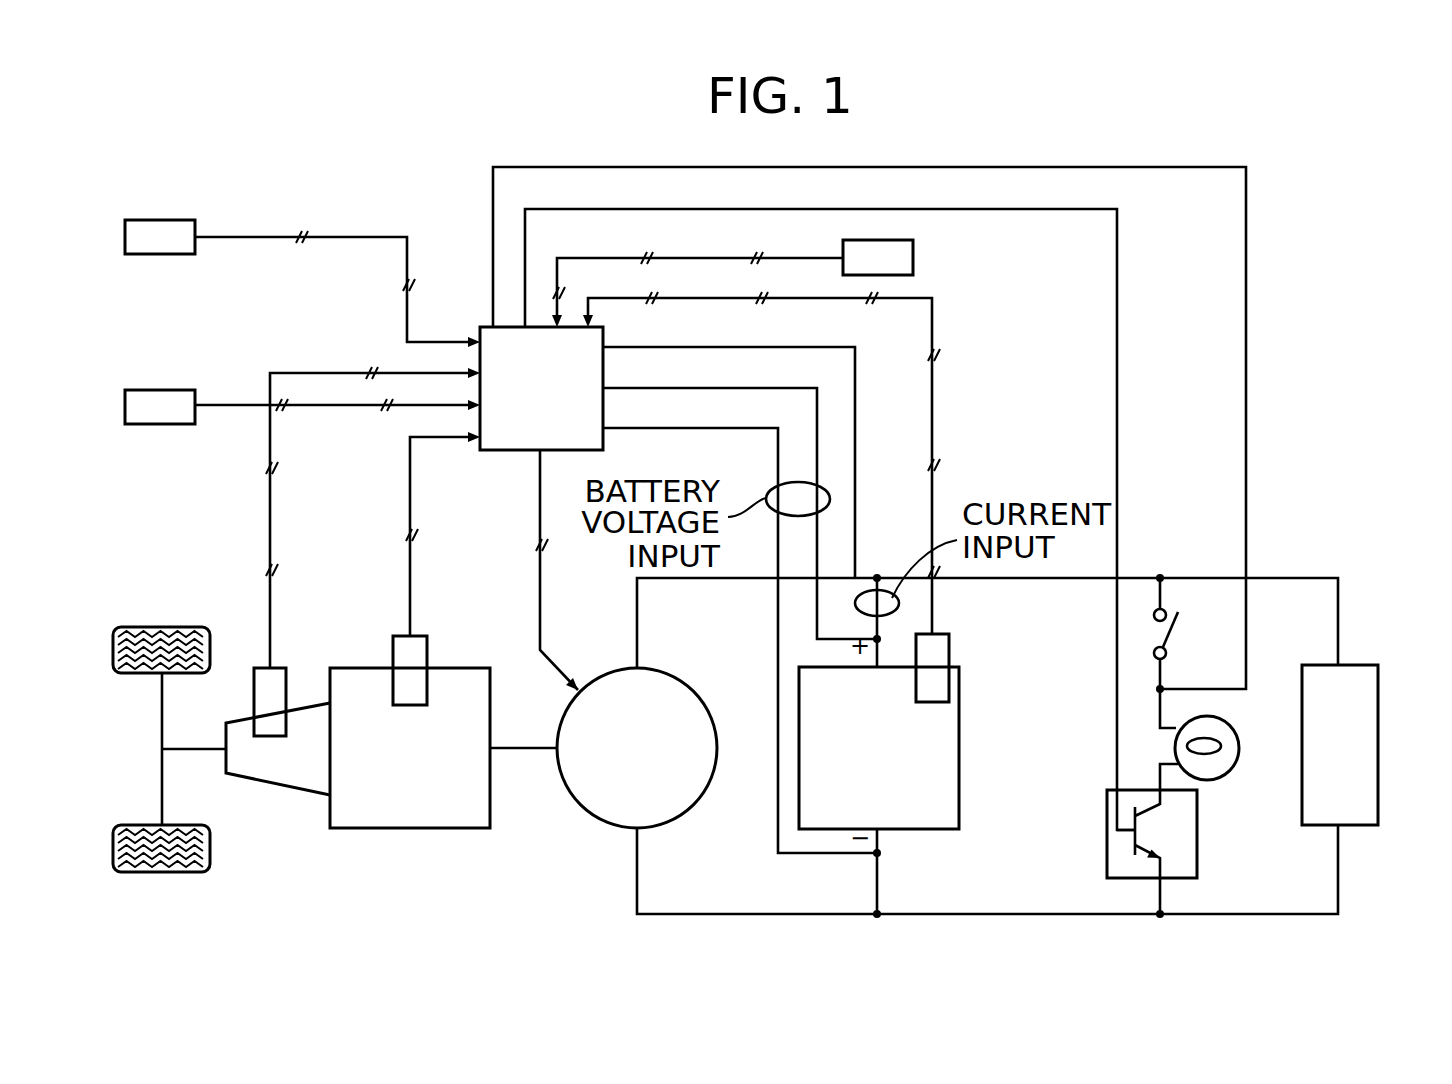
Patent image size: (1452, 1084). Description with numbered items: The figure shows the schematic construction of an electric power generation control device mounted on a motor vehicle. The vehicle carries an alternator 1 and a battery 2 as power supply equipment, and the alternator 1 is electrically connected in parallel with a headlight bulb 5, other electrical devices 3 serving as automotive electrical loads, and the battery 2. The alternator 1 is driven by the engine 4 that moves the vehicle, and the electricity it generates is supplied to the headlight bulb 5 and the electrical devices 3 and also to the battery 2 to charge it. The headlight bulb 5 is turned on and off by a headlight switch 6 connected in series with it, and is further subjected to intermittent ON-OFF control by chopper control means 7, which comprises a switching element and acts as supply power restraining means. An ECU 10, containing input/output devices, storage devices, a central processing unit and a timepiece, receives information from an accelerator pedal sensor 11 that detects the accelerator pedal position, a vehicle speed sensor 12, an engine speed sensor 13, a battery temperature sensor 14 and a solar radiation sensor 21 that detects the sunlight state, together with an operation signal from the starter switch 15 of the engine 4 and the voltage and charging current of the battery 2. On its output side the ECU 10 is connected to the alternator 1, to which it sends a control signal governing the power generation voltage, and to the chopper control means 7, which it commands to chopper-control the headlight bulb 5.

The alternator 1 is at (578, 808).
The battery 2 is at (960, 780).
The electrical devices 3 is at (1380, 688).
The engine 4 is at (372, 830).
The headlight bulb 5 is at (1238, 732).
The headlight switch 6 is at (1178, 630).
The chopper control means 7 is at (1198, 812).
The ECU 10 is at (501, 452).
The accelerator pedal sensor 11 is at (170, 390).
The vehicle speed sensor 12 is at (280, 666).
The engine speed sensor 13 is at (410, 634).
The battery temperature sensor 14 is at (950, 646).
The starter switch 15 is at (914, 257).
The solar radiation sensor 21 is at (170, 220).